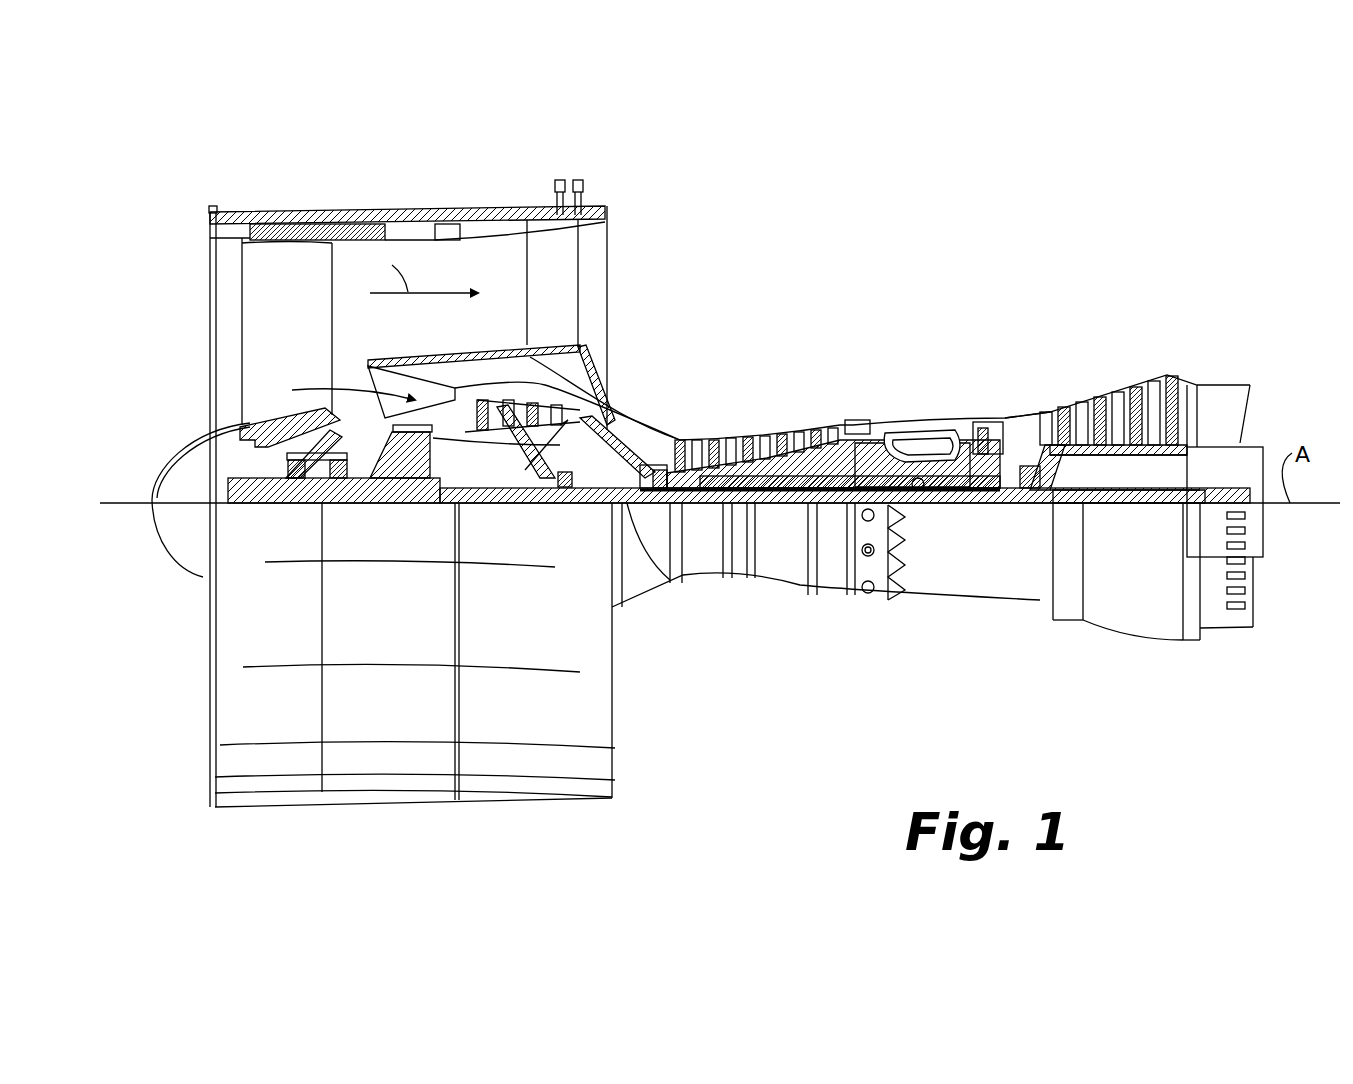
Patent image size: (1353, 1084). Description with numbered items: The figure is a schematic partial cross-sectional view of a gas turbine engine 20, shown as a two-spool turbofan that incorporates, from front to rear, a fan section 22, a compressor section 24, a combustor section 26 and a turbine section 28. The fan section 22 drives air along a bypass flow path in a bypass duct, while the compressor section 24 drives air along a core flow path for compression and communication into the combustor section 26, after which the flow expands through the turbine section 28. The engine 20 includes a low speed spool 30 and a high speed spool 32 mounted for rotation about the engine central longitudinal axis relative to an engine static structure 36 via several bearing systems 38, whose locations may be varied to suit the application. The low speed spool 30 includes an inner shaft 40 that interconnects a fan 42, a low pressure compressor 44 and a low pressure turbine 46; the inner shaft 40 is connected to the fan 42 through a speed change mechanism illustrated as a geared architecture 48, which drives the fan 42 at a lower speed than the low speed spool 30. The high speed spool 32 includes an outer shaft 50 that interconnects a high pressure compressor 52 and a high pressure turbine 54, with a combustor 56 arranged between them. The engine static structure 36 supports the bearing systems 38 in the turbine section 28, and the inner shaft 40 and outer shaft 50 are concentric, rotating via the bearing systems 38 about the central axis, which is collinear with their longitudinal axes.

The gas turbine engine 20 is at (935, 248).
The fan section 22 is at (318, 204).
The compressor section 24 is at (686, 395).
The combustor section 26 is at (945, 360).
The turbine section 28 is at (1102, 360).
The low speed spool 30 is at (787, 512).
The high speed spool 32 is at (840, 462).
The engine static structure 36 is at (833, 600).
The bearing systems 38 is at (298, 478).
The inner shaft 40 is at (660, 578).
The fan 42 is at (290, 349).
The low pressure compressor 44 is at (607, 362).
The low pressure turbine 46 is at (1124, 390).
The geared architecture 48 is at (425, 485).
The outer shaft 50 is at (922, 492).
The high pressure compressor 52 is at (757, 472).
The high pressure turbine 54 is at (978, 432).
The combustor 56 is at (912, 440).